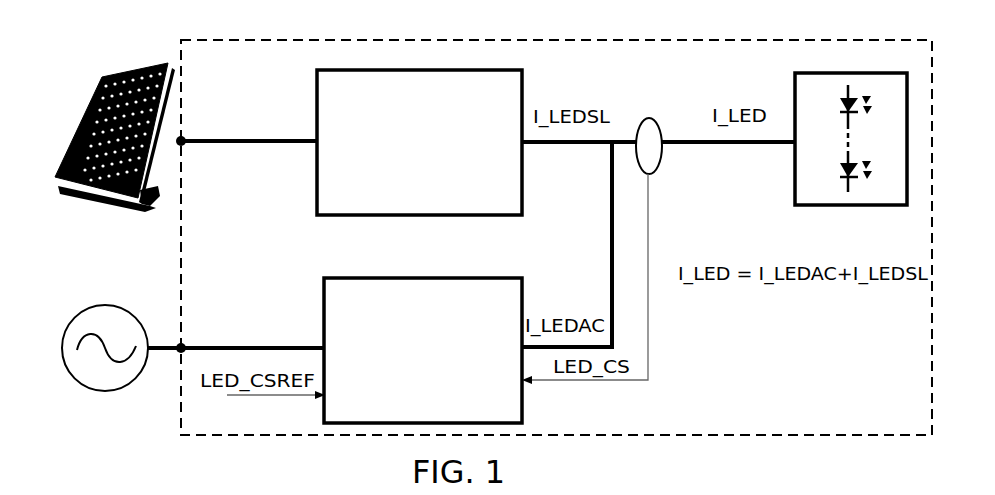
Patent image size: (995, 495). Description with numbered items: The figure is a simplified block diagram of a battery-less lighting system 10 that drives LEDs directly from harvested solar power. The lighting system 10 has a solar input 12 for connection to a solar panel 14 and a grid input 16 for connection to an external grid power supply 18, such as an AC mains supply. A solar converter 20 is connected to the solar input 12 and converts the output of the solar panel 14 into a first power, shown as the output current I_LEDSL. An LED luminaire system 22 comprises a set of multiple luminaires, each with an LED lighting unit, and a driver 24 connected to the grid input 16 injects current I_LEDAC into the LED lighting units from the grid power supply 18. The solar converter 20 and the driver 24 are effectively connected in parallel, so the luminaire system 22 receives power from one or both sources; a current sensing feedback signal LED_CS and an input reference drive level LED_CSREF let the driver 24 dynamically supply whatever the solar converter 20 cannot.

The lighting system 10 is at (572, 31).
The solar input 12 is at (183, 144).
The solar panel 14 is at (88, 105).
The grid input 16 is at (182, 346).
The grid power supply 18 is at (105, 305).
The solar converter 20 is at (345, 69).
The LED luminaire system 22 is at (837, 72).
The driver 24 is at (324, 317).